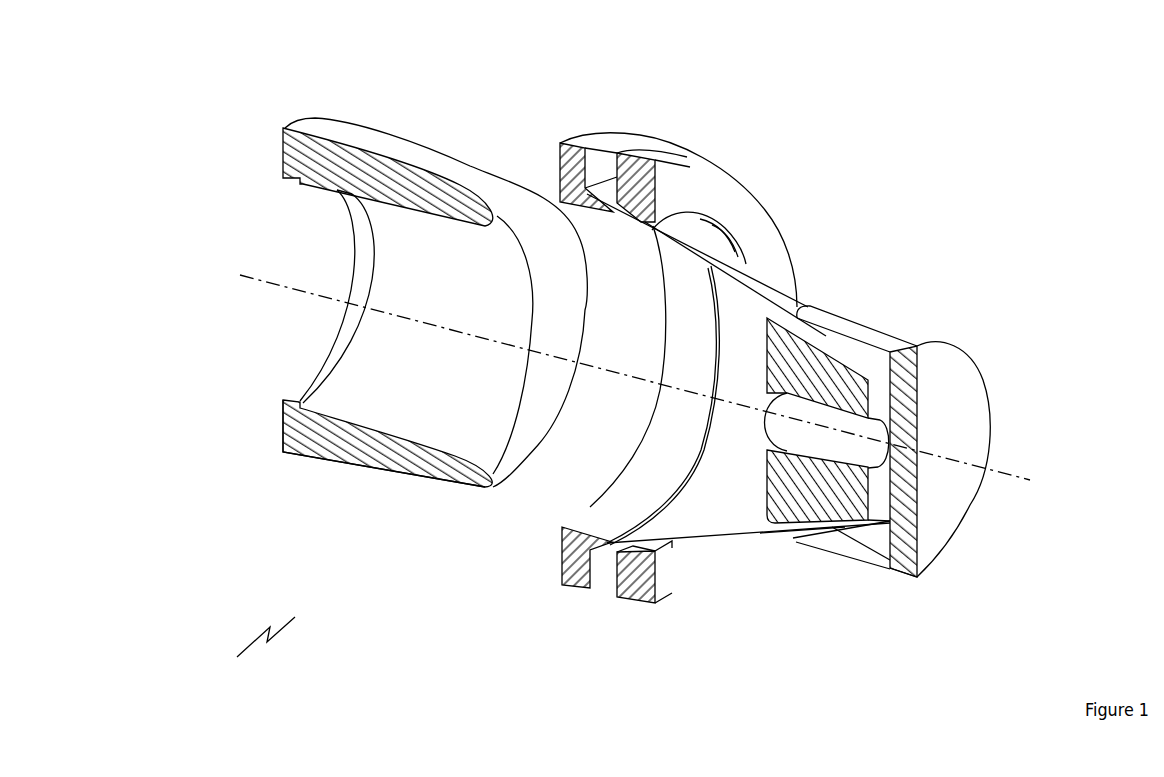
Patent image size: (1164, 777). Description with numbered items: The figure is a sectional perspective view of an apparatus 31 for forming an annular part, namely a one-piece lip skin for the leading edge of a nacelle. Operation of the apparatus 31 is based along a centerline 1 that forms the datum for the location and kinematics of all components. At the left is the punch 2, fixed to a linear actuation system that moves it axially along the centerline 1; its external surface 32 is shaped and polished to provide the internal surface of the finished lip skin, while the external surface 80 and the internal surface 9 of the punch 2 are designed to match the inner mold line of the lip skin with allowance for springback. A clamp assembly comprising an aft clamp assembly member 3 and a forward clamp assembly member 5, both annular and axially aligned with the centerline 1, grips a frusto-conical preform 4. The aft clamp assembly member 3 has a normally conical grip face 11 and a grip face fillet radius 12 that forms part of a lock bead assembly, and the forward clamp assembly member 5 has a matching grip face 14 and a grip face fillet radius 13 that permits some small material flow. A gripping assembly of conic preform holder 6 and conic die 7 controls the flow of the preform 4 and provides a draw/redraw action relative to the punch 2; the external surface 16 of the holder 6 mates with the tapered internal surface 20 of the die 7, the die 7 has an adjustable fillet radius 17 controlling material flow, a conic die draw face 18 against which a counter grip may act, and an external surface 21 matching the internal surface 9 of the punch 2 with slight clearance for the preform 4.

The centerline/carriage 1 is at (240, 272).
The punch 2 is at (283, 158).
The aft clamp assembly member 3 is at (590, 142).
The frusto-conical preform 4 is at (690, 240).
The forward clamp assembly member 5 is at (647, 160).
The conic preform holder 6 is at (828, 380).
The conic die 7 is at (853, 315).
The internal surface of the punch 9 is at (420, 440).
The grip face 11 is at (598, 548).
The grip face fillet radius 12 is at (660, 491).
The grip face fillet radius 13 is at (668, 552).
The grip face 14 is at (635, 560).
The external surface 16 is at (832, 526).
The fillet radius 17 is at (797, 550).
The conic die draw face 18 is at (793, 539).
The internal surface 20 is at (872, 532).
The external surface 21 is at (903, 578).
The apparatus 31 is at (250, 648).
The external surface 32 is at (345, 131).
The external surface of the punch 80 is at (313, 457).